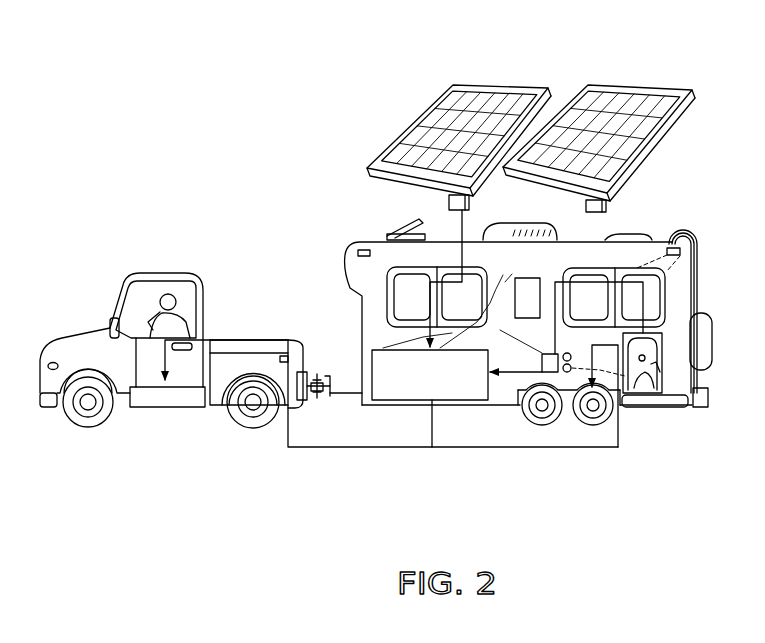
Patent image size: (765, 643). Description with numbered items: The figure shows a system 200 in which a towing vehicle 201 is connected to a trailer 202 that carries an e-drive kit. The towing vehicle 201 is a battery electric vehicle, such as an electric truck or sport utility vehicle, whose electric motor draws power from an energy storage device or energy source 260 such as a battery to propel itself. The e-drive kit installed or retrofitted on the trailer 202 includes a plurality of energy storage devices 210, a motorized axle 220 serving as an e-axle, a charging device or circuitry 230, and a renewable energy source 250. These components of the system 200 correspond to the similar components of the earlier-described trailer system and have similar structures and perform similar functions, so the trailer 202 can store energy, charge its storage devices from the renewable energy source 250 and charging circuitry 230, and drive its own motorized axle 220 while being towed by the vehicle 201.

The system 200 is at (183, 97).
The towing vehicle 201 is at (128, 282).
The trailer 202 is at (623, 232).
The plurality of energy storage devices 210 is at (364, 337).
The motorized axle 220 is at (598, 413).
The charging device or circuitry 230 is at (692, 400).
The renewable energy source 250 is at (521, 85).
The energy storage device or energy source 260 is at (177, 408).